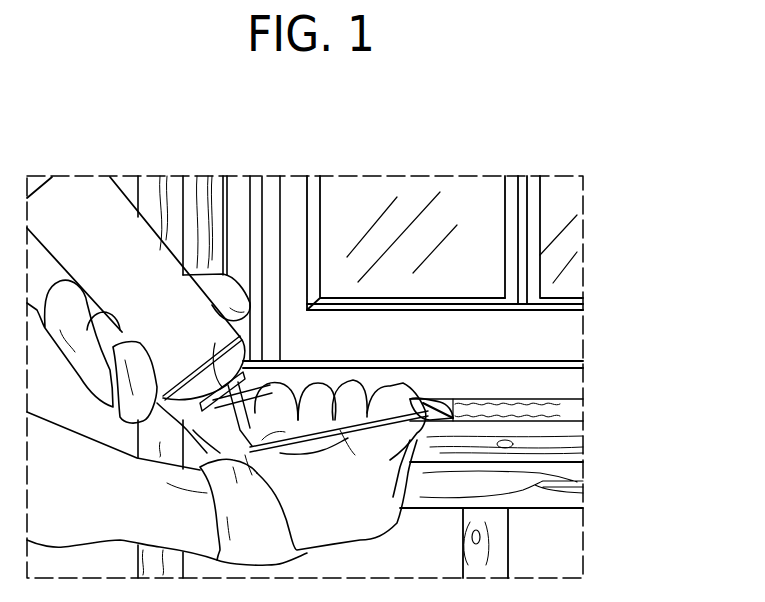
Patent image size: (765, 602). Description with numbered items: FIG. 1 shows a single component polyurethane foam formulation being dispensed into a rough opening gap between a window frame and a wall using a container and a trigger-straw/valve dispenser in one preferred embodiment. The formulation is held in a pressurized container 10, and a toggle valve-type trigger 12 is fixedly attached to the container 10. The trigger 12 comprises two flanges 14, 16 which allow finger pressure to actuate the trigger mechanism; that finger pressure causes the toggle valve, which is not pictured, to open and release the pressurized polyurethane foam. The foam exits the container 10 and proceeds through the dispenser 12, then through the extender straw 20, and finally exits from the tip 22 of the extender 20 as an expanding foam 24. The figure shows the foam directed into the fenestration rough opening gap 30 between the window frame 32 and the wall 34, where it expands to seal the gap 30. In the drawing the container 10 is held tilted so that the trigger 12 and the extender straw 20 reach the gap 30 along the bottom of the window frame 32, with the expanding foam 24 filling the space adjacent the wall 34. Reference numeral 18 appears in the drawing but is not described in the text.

The container 10 is at (92, 197).
The toggle valve-type trigger 12 is at (217, 345).
The flange 14 is at (240, 474).
The flange 16 is at (278, 383).
The extension tube 18 is at (293, 386).
The extender straw 20 is at (318, 448).
The tip 22 is at (450, 400).
The expanding foam 24 is at (573, 411).
The fenestration rough opening gap 30 is at (422, 398).
The window frame 32 is at (573, 383).
The wall 34 is at (563, 440).